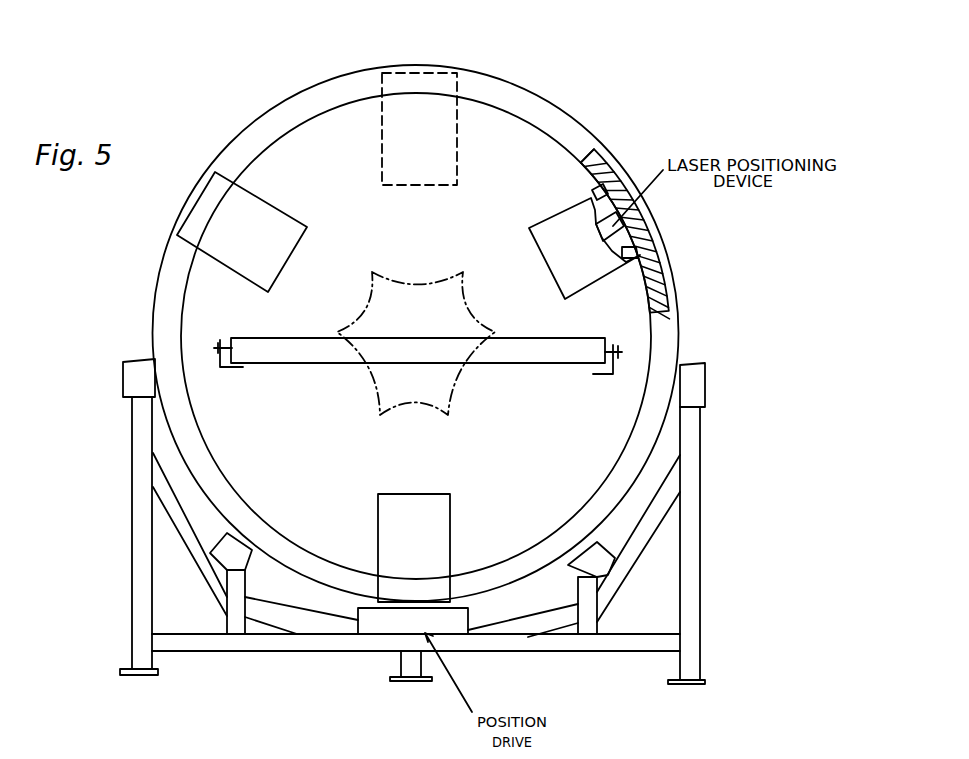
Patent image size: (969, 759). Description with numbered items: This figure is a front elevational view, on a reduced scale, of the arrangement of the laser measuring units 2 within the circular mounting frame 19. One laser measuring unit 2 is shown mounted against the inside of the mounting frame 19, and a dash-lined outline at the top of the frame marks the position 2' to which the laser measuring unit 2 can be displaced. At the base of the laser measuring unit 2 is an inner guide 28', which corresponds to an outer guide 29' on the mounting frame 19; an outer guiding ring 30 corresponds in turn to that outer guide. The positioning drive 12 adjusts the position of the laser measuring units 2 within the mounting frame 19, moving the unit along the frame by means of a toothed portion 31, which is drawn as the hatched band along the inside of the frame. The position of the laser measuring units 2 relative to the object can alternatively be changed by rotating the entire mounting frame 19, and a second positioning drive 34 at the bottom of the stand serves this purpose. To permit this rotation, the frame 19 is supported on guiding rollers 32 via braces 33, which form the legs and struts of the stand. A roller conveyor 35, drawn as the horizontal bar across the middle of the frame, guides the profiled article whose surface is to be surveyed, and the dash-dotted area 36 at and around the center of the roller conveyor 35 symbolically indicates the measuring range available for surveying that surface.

The laser measuring unit 2 is at (568, 248).
The displaced position of laser measuring unit 2' is at (419, 149).
The positioning drive 12 is at (612, 242).
The mounting frame 19 is at (568, 117).
The inner guide 28' is at (557, 187).
The outer guide 29' is at (555, 160).
The outer guiding ring 30 is at (667, 262).
The toothed portion 31 is at (661, 288).
The guiding rollers 32 is at (693, 387).
The braces 33 is at (687, 547).
The positioning drive 34 is at (435, 629).
The roller conveyor 35 is at (622, 352).
The measuring range area 36 is at (453, 400).